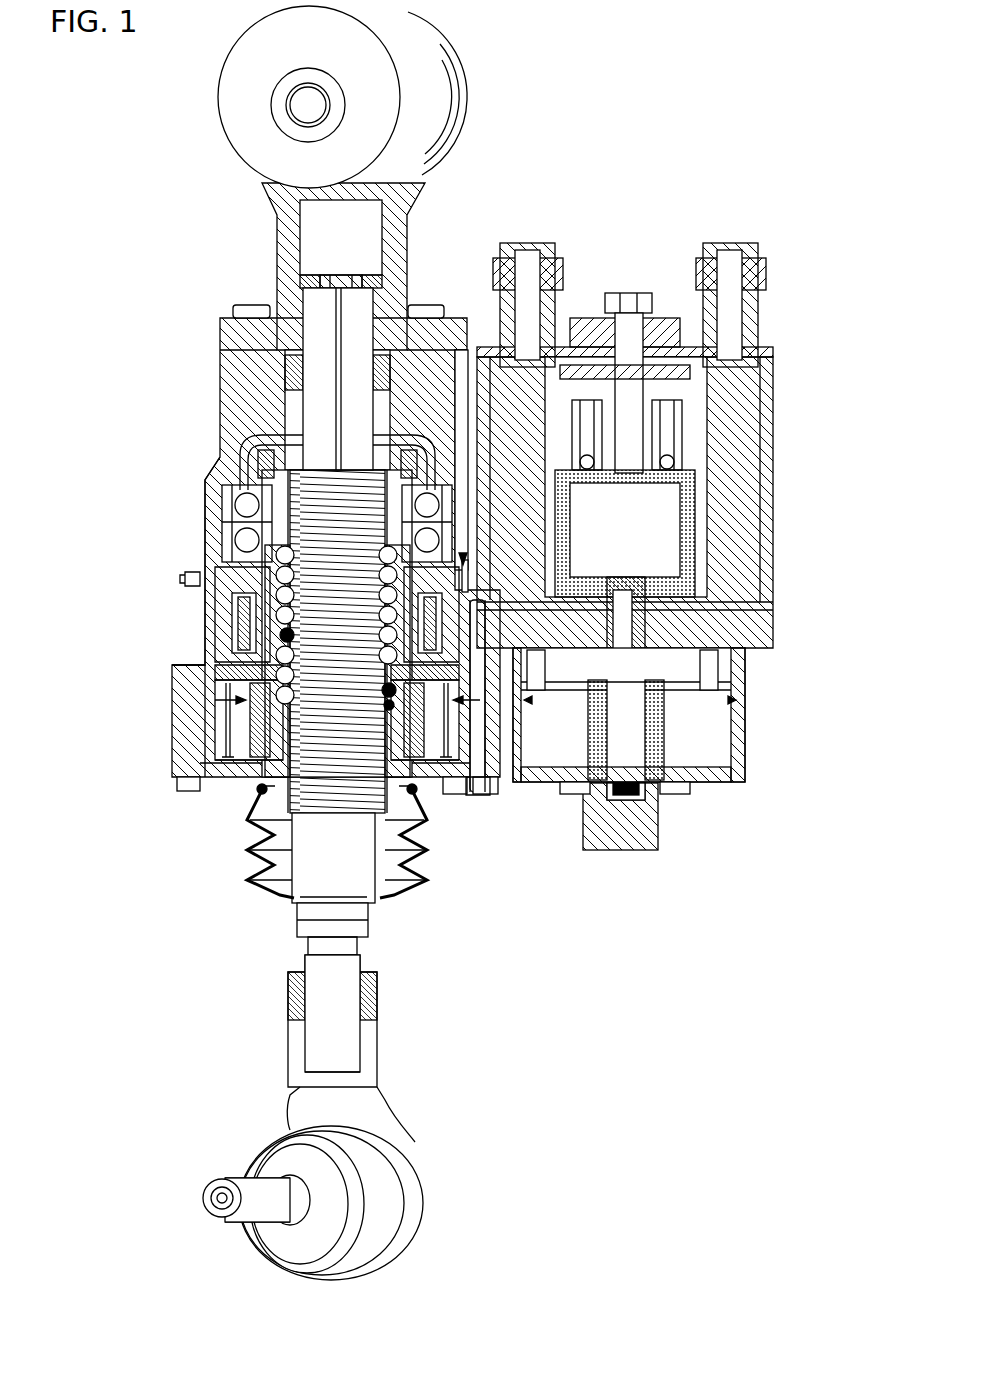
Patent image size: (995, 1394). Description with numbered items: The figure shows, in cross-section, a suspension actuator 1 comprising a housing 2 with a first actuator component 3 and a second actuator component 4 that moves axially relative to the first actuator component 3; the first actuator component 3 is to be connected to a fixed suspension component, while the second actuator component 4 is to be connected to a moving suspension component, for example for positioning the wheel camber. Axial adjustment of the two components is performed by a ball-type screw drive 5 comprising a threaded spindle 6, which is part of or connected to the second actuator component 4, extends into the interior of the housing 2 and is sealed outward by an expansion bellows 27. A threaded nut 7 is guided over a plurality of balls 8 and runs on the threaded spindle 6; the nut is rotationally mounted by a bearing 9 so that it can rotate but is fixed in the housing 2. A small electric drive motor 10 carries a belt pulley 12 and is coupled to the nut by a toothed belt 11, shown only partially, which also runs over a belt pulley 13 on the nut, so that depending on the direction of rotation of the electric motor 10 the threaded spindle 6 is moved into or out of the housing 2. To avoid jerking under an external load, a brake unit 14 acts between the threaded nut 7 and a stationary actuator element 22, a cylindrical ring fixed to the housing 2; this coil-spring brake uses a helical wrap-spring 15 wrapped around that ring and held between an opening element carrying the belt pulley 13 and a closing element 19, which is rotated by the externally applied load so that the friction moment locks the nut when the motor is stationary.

The suspension actuator 1 is at (477, 643).
The housing 2 is at (294, 582).
The first actuator component 3 is at (425, 197).
The second actuator component 4 is at (377, 1080).
The ball-type screw drive 5 is at (182, 470).
The threaded spindle 6 is at (262, 797).
The threaded nut 7 is at (257, 628).
The balls 8 is at (262, 637).
The bearing 9 is at (226, 520).
The drive motor 10 is at (668, 551).
The toothed belt 11 is at (545, 742).
The belt pulley 12 is at (733, 740).
The belt pulley 13 is at (237, 717).
The brake unit 14 is at (472, 598).
The helical wrap-spring 15 is at (262, 647).
The closing element 19 is at (476, 745).
The stationary actuator element 22 is at (225, 580).
The expansion bellows 27 is at (248, 827).